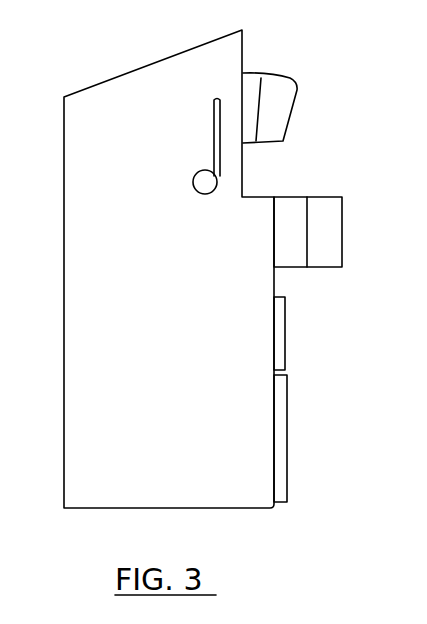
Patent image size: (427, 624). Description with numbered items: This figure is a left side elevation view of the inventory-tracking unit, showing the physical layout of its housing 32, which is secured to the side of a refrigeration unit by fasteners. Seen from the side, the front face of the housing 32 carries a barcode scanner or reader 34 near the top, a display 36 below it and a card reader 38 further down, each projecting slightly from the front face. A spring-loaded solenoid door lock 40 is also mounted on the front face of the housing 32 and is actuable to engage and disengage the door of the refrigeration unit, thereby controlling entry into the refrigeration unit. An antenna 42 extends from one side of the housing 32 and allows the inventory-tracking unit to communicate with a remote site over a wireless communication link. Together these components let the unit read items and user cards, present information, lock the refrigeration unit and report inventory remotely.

The housing 32 is at (68, 510).
The barcode scanner 34 is at (248, 73).
The display 36 is at (285, 332).
The card reader 38 is at (287, 457).
The spring-loaded solenoid door lock 40 is at (322, 267).
The antenna 42 is at (195, 191).